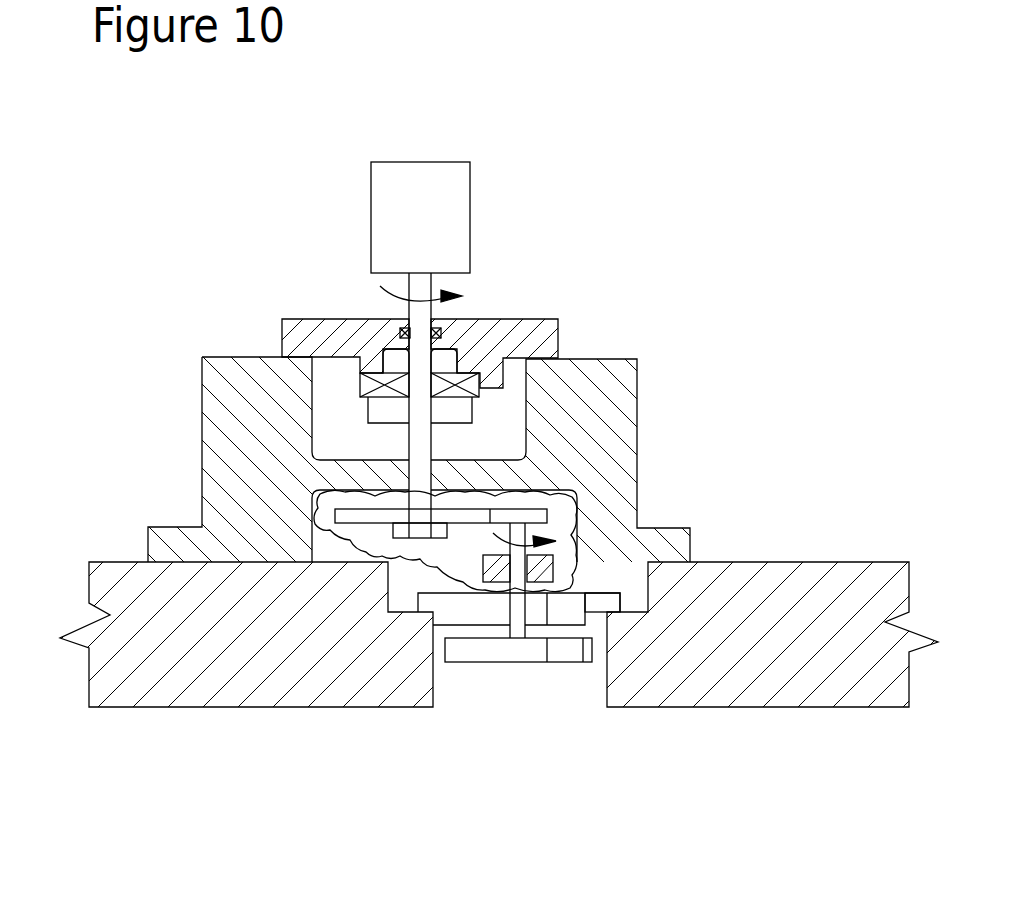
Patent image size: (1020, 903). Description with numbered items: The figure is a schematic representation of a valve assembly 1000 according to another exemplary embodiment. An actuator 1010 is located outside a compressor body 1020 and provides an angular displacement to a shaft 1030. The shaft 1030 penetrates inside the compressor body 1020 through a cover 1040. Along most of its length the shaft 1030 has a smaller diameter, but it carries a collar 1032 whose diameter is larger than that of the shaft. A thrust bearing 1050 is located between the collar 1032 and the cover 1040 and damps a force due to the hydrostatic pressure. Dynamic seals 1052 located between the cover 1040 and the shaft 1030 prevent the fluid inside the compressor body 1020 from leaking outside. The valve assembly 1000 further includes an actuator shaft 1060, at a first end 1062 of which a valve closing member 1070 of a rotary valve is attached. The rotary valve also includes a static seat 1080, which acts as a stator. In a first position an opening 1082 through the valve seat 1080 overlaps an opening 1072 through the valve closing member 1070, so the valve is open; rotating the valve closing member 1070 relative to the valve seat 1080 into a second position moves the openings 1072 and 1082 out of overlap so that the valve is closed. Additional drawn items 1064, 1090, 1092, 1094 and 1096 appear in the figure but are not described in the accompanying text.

The valve assembly 1000 is at (698, 159).
The actuator 1010 is at (448, 198).
The compressor body 1020 is at (147, 680).
The shaft 1030 is at (415, 288).
The collar 1032 is at (382, 405).
The cover 1040 is at (323, 332).
The thrust bearing 1050 is at (380, 380).
The dynamic seals 1052 is at (407, 333).
The actuator shaft 1060 is at (517, 612).
The first end 1062 is at (518, 634).
The magnetic coupling 1064 is at (518, 534).
The valve closing member 1070 is at (470, 648).
The opening 1072 is at (572, 657).
The static seat 1080 is at (598, 618).
The opening 1082 is at (578, 602).
The chamber 1090 is at (535, 511).
The impeller disc 1092 is at (359, 524).
The fluid 1094 is at (575, 493).
The housing 1096 is at (600, 426).